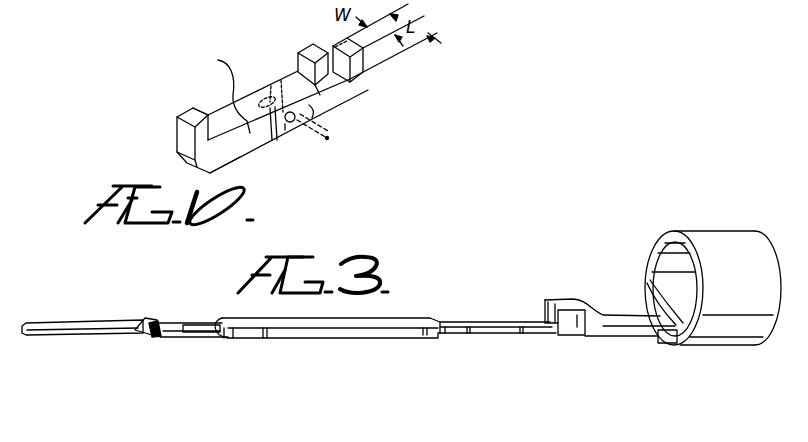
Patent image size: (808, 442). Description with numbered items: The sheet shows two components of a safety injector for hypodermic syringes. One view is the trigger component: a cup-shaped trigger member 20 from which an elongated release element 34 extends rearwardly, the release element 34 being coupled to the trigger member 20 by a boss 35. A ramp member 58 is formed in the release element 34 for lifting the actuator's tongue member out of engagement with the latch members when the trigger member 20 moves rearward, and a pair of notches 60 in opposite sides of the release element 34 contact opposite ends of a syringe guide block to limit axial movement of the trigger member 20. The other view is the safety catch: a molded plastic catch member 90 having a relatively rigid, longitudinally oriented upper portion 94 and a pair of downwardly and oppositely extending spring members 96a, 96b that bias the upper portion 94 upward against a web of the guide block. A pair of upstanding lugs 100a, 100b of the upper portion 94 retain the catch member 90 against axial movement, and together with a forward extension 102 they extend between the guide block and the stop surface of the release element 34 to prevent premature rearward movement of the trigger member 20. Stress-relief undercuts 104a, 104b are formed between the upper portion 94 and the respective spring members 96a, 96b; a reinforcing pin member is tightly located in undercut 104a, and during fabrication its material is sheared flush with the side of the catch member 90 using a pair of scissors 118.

In FIG. 3, the trigger member 20 is at (692, 231).
In FIG. 3, the release element 34 is at (214, 282).
In FIG. 3, the boss 35 is at (647, 283).
In FIG. 3, the ramp member 58 is at (147, 319).
In FIG. 3, the notches 60 is at (464, 322).
In FIG. 10, the catch member 90 is at (176, 151).
In FIG. 10, the upper portion 94 is at (320, 95).
In FIG. 10, the spring member 96a is at (284, 130).
In FIG. 10, the spring member 96b is at (246, 162).
In FIG. 10, the upstanding lug 100a is at (298, 60).
In FIG. 10, the upstanding lug 100b is at (205, 104).
In FIG. 10, the forward extension 102 is at (336, 40).
In FIG. 10, the stress-relief undercut 104a is at (280, 74).
In FIG. 10, the stress-relief undercut 104b is at (210, 91).
In FIG. 10, the scissors 118 is at (327, 137).